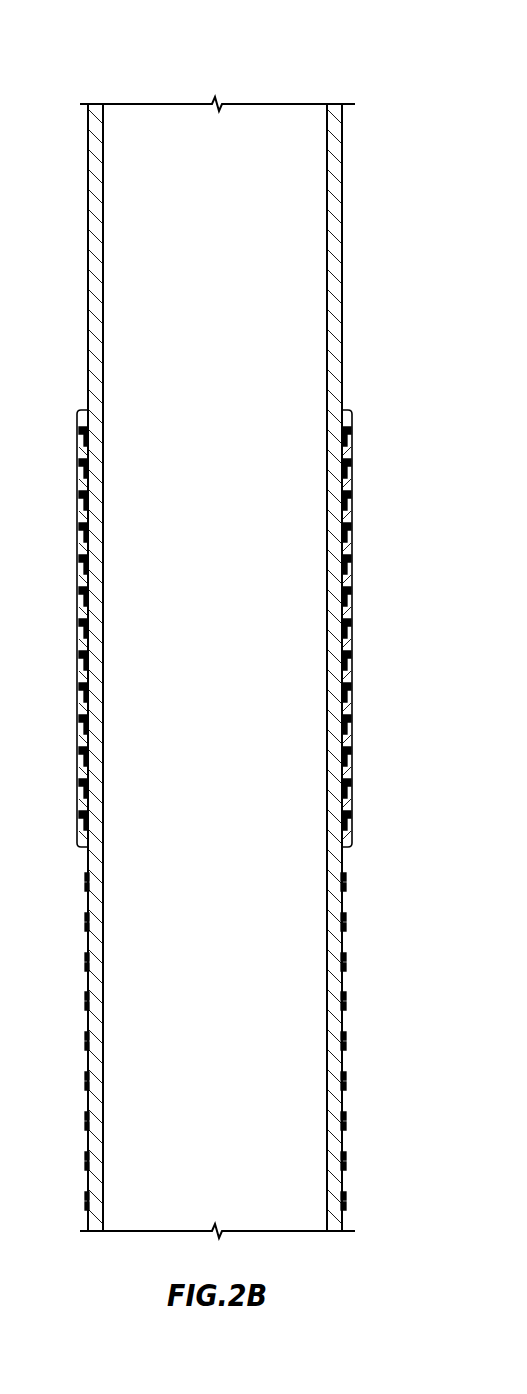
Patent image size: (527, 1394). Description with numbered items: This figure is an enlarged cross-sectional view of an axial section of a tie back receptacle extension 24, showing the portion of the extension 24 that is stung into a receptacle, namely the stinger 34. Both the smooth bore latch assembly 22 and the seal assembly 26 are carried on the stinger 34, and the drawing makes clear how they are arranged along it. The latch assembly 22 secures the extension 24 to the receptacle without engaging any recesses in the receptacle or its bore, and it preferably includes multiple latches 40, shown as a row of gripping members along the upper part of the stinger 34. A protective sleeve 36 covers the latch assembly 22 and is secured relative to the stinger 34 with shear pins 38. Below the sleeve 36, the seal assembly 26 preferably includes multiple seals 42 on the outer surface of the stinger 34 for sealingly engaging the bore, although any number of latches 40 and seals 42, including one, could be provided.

The tie back receptacle extension 24 is at (343, 62).
The stinger 34 is at (345, 379).
The protective sleeve 36 is at (78, 578).
The smooth bore latch assembly 22 is at (353, 608).
The shear pins 38 is at (78, 437).
The latches 40 is at (82, 603).
The seal assembly 26 is at (350, 993).
The seals 42 is at (86, 880).